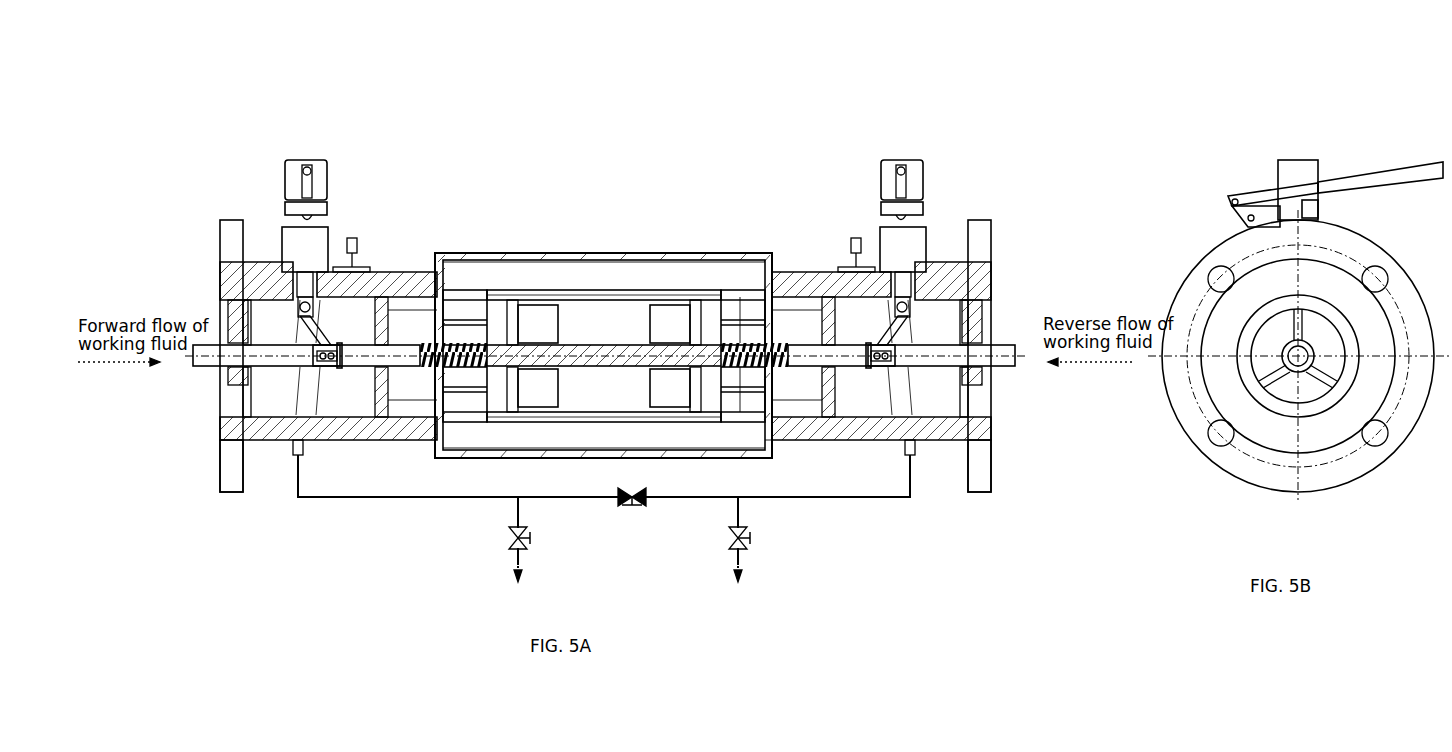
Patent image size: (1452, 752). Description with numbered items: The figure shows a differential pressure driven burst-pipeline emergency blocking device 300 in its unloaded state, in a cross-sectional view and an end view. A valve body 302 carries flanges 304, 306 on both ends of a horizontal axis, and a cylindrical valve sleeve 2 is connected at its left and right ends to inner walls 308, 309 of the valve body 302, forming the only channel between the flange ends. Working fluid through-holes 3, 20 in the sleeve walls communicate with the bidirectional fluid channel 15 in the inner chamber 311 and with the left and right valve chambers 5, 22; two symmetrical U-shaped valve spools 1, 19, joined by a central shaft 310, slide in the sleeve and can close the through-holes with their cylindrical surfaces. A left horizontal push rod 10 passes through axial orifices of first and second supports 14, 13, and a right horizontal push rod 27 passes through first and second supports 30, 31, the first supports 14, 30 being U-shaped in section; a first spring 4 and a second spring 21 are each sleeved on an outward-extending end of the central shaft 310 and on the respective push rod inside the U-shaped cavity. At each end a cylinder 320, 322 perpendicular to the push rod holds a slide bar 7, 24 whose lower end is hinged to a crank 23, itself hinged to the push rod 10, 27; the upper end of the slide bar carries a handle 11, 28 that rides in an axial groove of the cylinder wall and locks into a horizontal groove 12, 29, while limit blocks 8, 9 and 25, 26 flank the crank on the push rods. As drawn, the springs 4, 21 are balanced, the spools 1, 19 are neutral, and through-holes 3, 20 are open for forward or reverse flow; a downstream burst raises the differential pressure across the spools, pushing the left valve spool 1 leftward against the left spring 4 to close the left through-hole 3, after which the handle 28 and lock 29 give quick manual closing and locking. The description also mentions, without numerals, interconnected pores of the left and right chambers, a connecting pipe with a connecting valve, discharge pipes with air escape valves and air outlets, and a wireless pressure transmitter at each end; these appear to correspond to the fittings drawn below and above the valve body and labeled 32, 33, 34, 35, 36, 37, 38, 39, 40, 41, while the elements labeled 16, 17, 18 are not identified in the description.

In FIG. 5A, the differential pressure driven burst-pipeline emergency blocking device 300 is at (262, 125).
In FIG. 5B, the differential pressure driven burst-pipeline emergency blocking device 300 is at (1178, 173).
In FIG. 5A, the valve spool 1 is at (581, 297).
In FIG. 5A, the cylindrical valve sleeve 2 is at (601, 300).
In FIG. 5A, the working fluid through-hole 3 is at (451, 419).
In FIG. 5A, the first spring 4 is at (484, 300).
In FIG. 5A, the left valve body cavity 5 is at (226, 426).
In FIG. 5A, the slide bar 7 is at (307, 282).
In FIG. 5A, the left limit block 8 is at (246, 346).
In FIG. 5A, the right limit block 9 is at (329, 370).
In FIG. 5A, the left horizontal push rod 10 is at (278, 395).
In FIG. 5B, the left horizontal push rod 10 is at (1305, 372).
In FIG. 5A, the handle 11 is at (308, 168).
In FIG. 5B, the handle 11 is at (1383, 172).
In FIG. 5A, the horizontal groove 12 is at (313, 208).
In FIG. 5B, the horizontal groove 12 is at (1308, 200).
In FIG. 5A, the second support 13 is at (206, 356).
In FIG. 5B, the second support 13 is at (1345, 268).
In FIG. 5A, the first support 14 is at (385, 419).
In FIG. 5A, the bidirectional fluid channel 15 is at (458, 278).
In FIG. 5A, the coil 16 is at (536, 306).
In FIG. 5A, the upstream flange plate 17 is at (227, 240).
In FIG. 5A, the downstream flange plate 18 is at (983, 452).
In FIG. 5A, the right valve spool 19 is at (678, 300).
In FIG. 5A, the right through-hole 20 is at (760, 262).
In FIG. 5A, the second spring 21 is at (758, 320).
In FIG. 5A, the right valve body cavity 22 is at (882, 401).
In FIG. 5A, the crank 23 is at (319, 325).
In FIG. 5A, the slide bar 24 is at (912, 320).
In FIG. 5A, the limit block 25 is at (766, 441).
In FIG. 5A, the limit block 26 is at (969, 330).
In FIG. 5A, the right horizontal push rod 27 is at (958, 419).
In FIG. 5A, the handle 28 is at (903, 172).
In FIG. 5A, the horizontal groove 29 is at (906, 207).
In FIG. 5A, the first support 30 is at (820, 405).
In FIG. 5A, the second support 31 is at (976, 378).
In FIG. 5A, the upstream drain port 32 is at (297, 457).
In FIG. 5A, the downstream drain port 33 is at (906, 452).
In FIG. 5A, the bypass pipe 34 is at (570, 498).
In FIG. 5A, the bypass valve 35 is at (640, 501).
In FIG. 5A, the upstream drain valve 36 is at (508, 536).
In FIG. 5A, the upstream drain outlet 37 is at (515, 578).
In FIG. 5A, the downstream drain valve 38 is at (750, 540).
In FIG. 5A, the downstream drain outlet 39 is at (750, 578).
In FIG. 5A, the upstream pressure port 40 is at (357, 240).
In FIG. 5A, the downstream pressure port 41 is at (855, 247).
In FIG. 5A, the valve body 302 is at (246, 272).
In FIG. 5A, the flange 304 is at (237, 284).
In FIG. 5A, the flange 306 is at (988, 288).
In FIG. 5A, the inner wall 308 is at (437, 253).
In FIG. 5A, the inner wall 309 is at (744, 355).
In FIG. 5A, the central shaft 310 is at (618, 360).
In FIG. 5A, the inner chamber of the valve body 311 is at (578, 447).
In FIG. 5A, the cylinder 320 is at (307, 267).
In FIG. 5A, the cylinder 322 is at (904, 242).